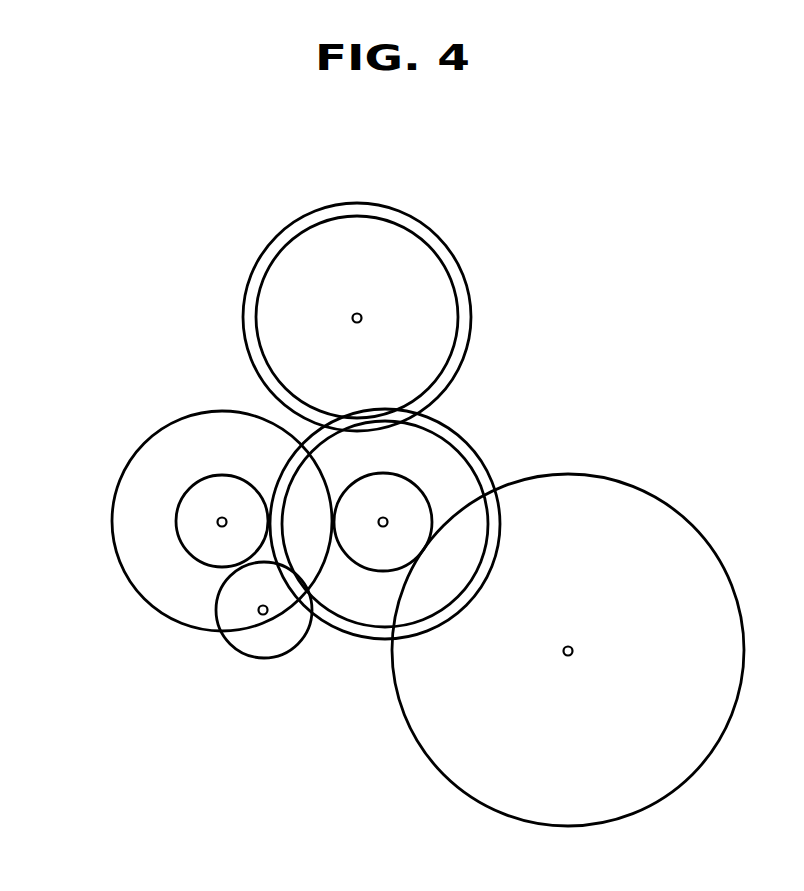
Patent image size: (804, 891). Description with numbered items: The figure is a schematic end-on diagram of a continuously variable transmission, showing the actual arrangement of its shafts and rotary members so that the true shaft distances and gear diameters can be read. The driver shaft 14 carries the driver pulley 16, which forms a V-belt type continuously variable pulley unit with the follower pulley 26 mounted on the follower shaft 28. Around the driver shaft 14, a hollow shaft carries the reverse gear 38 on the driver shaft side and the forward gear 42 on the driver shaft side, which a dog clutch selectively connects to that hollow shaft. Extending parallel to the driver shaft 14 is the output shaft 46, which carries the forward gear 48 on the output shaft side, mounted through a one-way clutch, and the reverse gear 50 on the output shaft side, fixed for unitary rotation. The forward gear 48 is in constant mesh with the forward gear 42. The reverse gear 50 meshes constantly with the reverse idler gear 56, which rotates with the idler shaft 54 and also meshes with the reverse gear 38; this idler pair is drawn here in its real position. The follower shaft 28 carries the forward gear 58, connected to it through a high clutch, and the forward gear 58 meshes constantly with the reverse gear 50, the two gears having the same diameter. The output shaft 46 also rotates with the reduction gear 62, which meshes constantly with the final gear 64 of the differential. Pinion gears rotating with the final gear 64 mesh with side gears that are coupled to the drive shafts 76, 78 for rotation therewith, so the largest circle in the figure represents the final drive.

The driver shaft 14 is at (221, 517).
The driver pulley 16 is at (197, 412).
The follower pulley 26 is at (262, 245).
The follower shaft 28 is at (362, 318).
The reverse gear on the driver shaft side 38 is at (145, 521).
The forward gear on the driver shaft side 42 is at (177, 528).
The output shaft 46 is at (383, 527).
The forward gear on the output shaft side 48 is at (458, 433).
The reverse gear on the output shaft side 50 is at (471, 471).
The idler shaft 54 is at (259, 606).
The reverse idler gear 56 is at (297, 650).
The forward gear 58 is at (451, 286).
The reduction gear 62 is at (416, 484).
The final gear 64 is at (642, 489).
The drive shaft 76 is at (629, 640).
The drive shaft 78 is at (573, 649).